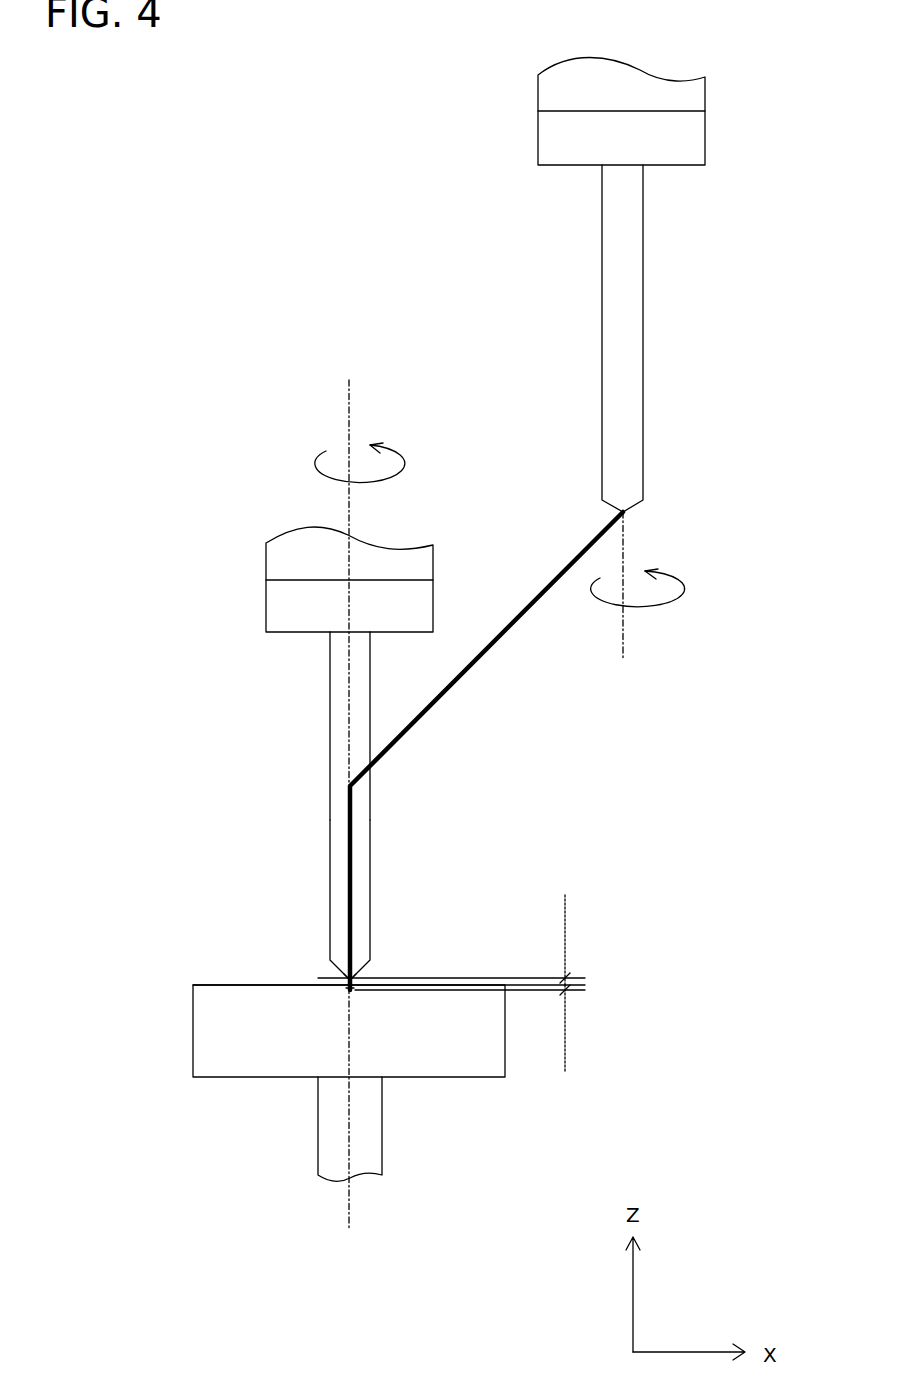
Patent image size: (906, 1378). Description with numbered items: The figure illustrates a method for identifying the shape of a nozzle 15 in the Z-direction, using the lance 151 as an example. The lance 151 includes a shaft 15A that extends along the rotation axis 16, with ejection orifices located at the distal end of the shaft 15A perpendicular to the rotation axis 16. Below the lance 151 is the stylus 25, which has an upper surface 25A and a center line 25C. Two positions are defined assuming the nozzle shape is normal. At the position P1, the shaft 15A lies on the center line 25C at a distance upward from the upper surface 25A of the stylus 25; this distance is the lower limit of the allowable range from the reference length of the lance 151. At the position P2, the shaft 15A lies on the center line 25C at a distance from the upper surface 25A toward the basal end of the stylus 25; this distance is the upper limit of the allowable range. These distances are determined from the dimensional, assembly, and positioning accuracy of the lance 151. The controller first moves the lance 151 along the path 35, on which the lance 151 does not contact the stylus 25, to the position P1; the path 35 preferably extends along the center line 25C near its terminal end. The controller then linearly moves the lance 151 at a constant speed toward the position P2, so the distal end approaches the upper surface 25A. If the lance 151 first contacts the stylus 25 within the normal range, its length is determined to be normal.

The rotation axis 16 is at (358, 402).
The nozzle 15 is at (316, 710).
The shaft 15A is at (330, 762).
The lance 151 is at (330, 855).
The path 35 is at (465, 677).
The position P1 is at (322, 957).
The position P2 is at (350, 988).
The stylus 25 is at (450, 1079).
The upper surface 25A is at (220, 982).
The center line 25C is at (350, 1190).